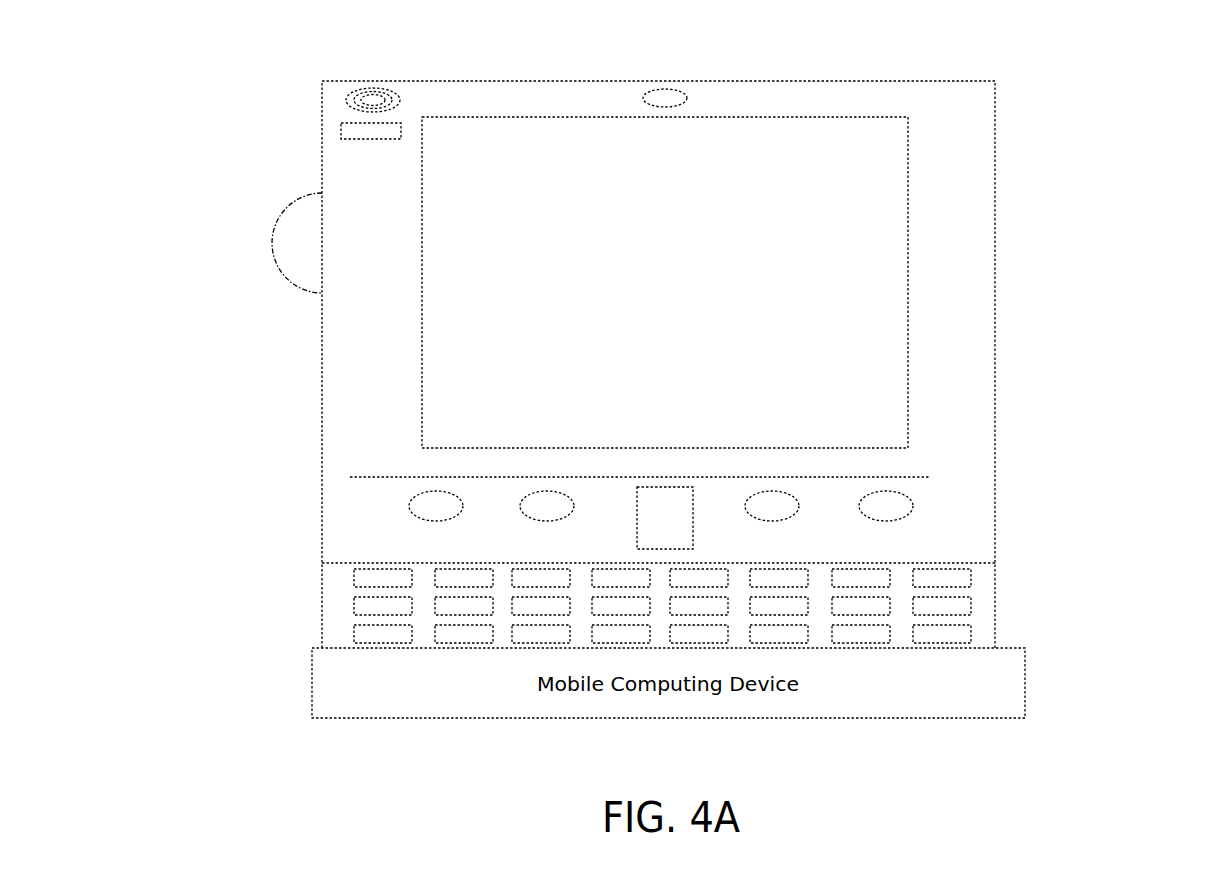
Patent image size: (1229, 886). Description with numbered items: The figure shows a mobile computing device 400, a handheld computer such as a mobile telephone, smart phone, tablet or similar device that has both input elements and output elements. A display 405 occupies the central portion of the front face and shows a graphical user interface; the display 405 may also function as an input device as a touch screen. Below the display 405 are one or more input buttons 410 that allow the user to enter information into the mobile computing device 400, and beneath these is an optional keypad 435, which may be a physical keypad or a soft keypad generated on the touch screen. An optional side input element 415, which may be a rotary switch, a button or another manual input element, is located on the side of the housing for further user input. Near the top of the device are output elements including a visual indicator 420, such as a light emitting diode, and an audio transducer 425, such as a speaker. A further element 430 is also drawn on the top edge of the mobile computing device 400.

The mobile computing device 400 is at (724, 337).
The display 405 is at (484, 282).
The input buttons 410 is at (663, 534).
The side input element 415 is at (219, 243).
The visual indicator 420 is at (282, 123).
The audio transducer 425 is at (282, 92).
The power button 430 is at (735, 68).
The keypad 435 is at (575, 603).